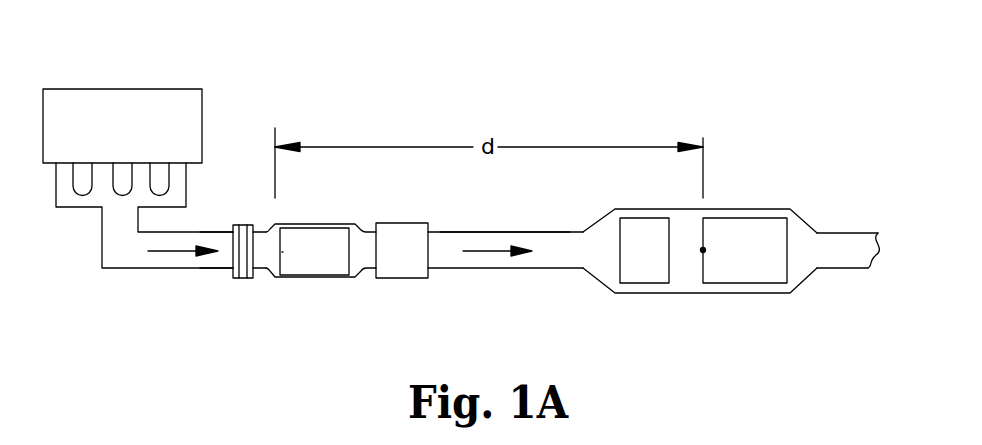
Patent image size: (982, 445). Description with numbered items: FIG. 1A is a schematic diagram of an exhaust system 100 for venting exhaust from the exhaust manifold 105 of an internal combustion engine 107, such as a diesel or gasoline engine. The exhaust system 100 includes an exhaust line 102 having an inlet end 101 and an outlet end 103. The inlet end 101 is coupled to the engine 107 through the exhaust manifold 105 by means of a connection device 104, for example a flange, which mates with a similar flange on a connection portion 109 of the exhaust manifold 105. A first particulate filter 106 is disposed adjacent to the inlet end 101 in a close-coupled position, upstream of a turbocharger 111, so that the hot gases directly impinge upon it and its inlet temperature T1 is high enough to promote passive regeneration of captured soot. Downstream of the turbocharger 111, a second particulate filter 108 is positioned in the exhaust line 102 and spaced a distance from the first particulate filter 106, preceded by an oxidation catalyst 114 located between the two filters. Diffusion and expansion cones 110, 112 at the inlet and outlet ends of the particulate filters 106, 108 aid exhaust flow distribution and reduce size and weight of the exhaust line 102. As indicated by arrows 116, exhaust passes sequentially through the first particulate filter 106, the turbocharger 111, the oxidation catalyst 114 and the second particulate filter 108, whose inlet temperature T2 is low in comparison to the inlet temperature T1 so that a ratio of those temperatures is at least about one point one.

The exhaust system 100 is at (485, 219).
The inlet end 101 is at (262, 257).
The exhaust line 102 is at (556, 224).
The outlet end 103 is at (825, 258).
The connection device 104 is at (250, 225).
The exhaust manifold 105 is at (131, 257).
The first particulate filter 106 is at (313, 235).
The internal combustion engine 107 is at (202, 105).
The second particulate filter 108 is at (732, 218).
The connection portion 109 is at (220, 258).
The diffusion cone 110 is at (360, 270).
The turbocharger 111 is at (387, 228).
The expansion cone 112 is at (595, 280).
The oxidation catalyst 114 is at (653, 218).
The arrows 116 is at (175, 253).
The inlet temperature of the first filter T1 is at (282, 252).
The inlet temperature of the second filter T2 is at (703, 252).